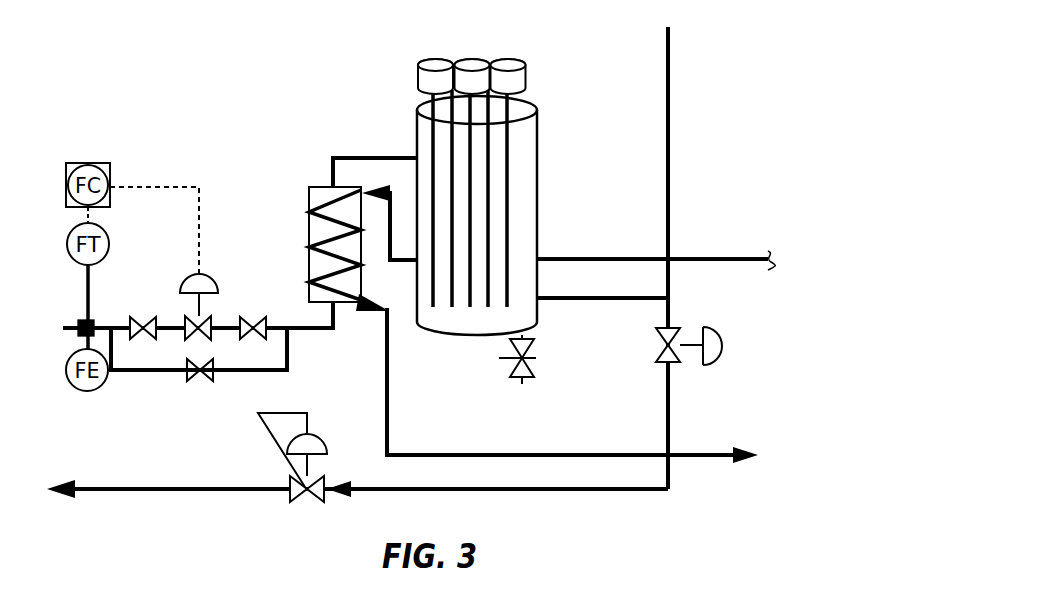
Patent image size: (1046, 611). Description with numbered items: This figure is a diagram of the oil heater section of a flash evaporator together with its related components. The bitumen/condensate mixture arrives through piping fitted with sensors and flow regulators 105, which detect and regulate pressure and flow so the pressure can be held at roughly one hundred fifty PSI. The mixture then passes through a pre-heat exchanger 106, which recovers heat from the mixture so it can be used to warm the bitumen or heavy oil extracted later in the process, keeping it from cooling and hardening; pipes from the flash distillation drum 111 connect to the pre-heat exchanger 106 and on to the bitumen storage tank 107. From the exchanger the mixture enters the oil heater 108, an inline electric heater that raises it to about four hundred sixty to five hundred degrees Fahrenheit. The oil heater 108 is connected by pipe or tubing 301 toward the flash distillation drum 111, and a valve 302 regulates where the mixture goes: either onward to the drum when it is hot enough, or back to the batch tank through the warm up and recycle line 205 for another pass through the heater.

The sensors and flow regulators 105 is at (177, 350).
The pre-heat exchanger 106 is at (310, 228).
The oil heater 108 is at (464, 313).
The pipe or tubing 301 is at (580, 300).
The valve 302 is at (658, 352).
The warm up and recycle line 205 is at (155, 489).
The bitumen storage tank 107 is at (611, 388).
The flash distillation drum 111 is at (708, 259).